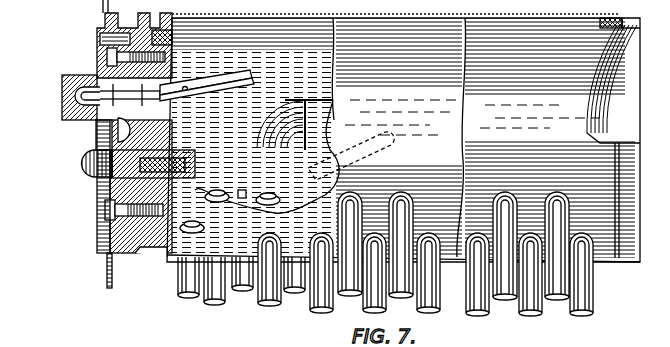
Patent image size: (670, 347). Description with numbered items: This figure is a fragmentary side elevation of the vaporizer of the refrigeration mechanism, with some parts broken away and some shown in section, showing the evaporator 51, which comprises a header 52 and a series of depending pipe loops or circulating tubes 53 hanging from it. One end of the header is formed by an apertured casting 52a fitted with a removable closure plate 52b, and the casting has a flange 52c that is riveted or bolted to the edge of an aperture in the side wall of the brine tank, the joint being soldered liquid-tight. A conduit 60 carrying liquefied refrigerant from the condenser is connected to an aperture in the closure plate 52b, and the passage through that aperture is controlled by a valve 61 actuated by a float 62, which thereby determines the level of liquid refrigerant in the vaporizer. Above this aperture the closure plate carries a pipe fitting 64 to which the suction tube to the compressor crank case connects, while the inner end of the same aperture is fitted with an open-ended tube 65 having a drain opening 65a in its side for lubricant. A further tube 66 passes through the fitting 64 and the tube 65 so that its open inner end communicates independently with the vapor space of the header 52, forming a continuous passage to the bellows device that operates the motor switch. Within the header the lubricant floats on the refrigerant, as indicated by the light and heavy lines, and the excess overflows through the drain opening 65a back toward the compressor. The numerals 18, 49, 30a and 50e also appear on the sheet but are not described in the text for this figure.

The header 52 is at (527, 30).
The casing 18 is at (274, 5).
The shaft 49 is at (421, 5).
The float 62 is at (334, 84).
The valve 61 is at (218, 232).
The evaporator 51 is at (100, 64).
The pipe fitting 64 is at (62, 84).
The tube 66 is at (62, 115).
The open-ended tube 65 is at (182, 83).
The drain opening 65a is at (207, 68).
The removable closure plate 52b is at (96, 192).
The apertured casting 52a is at (96, 234).
The plate tail 30a is at (108, 270).
The flange 52c is at (115, 253).
The support 50e is at (27, 339).
The conduit 60 is at (85, 158).
The pipe loops 53 is at (307, 296).